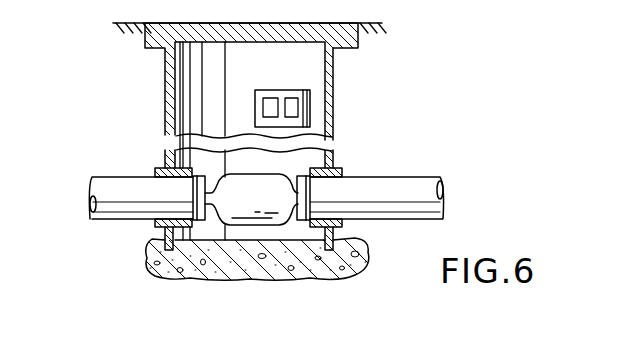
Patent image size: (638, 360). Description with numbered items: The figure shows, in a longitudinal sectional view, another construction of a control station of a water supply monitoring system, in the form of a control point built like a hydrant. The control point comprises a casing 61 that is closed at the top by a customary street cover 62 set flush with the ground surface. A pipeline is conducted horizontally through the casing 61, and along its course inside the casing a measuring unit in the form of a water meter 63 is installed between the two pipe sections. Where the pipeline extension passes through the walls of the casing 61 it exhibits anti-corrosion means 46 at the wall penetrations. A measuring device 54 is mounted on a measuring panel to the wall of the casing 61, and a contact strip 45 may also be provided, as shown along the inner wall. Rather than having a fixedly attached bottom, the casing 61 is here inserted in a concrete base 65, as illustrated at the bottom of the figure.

The contact strip 45 is at (176, 79).
The anti-corrosion means 46 is at (158, 168).
The measuring device 54 is at (270, 110).
The casing 61 is at (330, 103).
The street cover 62 is at (342, 30).
The water meter 63 is at (251, 211).
The concrete base 65 is at (368, 256).